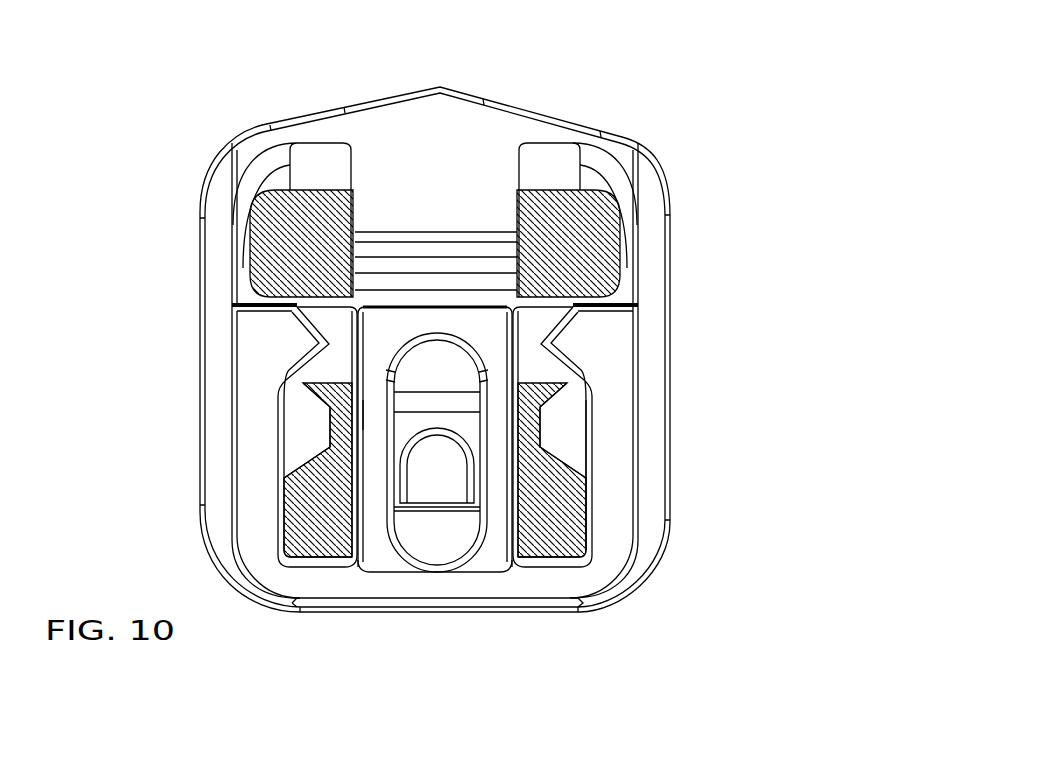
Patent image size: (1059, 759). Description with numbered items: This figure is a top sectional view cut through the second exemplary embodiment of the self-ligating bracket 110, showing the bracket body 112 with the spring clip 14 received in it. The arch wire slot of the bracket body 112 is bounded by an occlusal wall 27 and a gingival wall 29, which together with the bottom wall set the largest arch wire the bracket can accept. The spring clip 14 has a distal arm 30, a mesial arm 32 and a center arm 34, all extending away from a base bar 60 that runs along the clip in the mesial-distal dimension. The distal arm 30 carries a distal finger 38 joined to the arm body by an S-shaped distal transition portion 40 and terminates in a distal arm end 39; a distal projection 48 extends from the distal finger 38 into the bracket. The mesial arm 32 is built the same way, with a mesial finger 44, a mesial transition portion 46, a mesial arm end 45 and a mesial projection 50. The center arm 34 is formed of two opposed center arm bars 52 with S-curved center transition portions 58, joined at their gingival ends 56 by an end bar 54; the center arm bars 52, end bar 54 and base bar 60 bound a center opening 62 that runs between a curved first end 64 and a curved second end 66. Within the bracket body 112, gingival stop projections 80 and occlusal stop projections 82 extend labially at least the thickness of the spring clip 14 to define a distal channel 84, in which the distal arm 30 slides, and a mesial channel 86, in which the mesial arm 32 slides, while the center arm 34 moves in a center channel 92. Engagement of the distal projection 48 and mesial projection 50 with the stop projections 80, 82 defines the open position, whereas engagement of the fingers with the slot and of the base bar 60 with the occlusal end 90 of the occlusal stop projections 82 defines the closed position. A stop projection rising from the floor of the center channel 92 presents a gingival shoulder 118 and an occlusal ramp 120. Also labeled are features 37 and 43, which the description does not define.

The self-ligating bracket 110 is at (645, 118).
The bracket body 112 is at (630, 213).
The spring clip 14 is at (500, 598).
The distal arm 30 is at (262, 505).
The mesial arm 32 is at (613, 497).
The distal transition portion 40 is at (250, 380).
The distal finger 38 is at (232, 320).
The upper pocket 37 is at (252, 323).
The distal arm end 39 is at (263, 263).
The gingival wall 29 is at (320, 324).
The mesial projection 50 is at (605, 275).
The mesial arm end 45 is at (620, 300).
The mesial finger 44 is at (625, 318).
The right shelf 43 is at (640, 320).
The occlusal wall 27 is at (295, 352).
The distal projection 48 is at (325, 348).
The center arm bars 52 is at (367, 413).
The gingival stop projections 80 is at (335, 432).
The occlusal end 90 is at (330, 566).
The occlusal stop projections 82 is at (297, 490).
The distal channel 84 is at (290, 400).
The mesial channel 86 is at (572, 408).
The mesial transition portion 46 is at (620, 410).
The center transition portions 58 is at (378, 376).
The end bar 54 is at (450, 320).
The gingival ends 56 is at (377, 323).
The base bar 60 is at (342, 578).
The center arm 34 is at (436, 293).
The first end 64 is at (490, 315).
The second end 66 is at (435, 563).
The center opening 62 is at (422, 527).
The center channel 92 is at (428, 403).
The gingival shoulder 118 is at (437, 430).
The occlusal ramp 120 is at (447, 473).